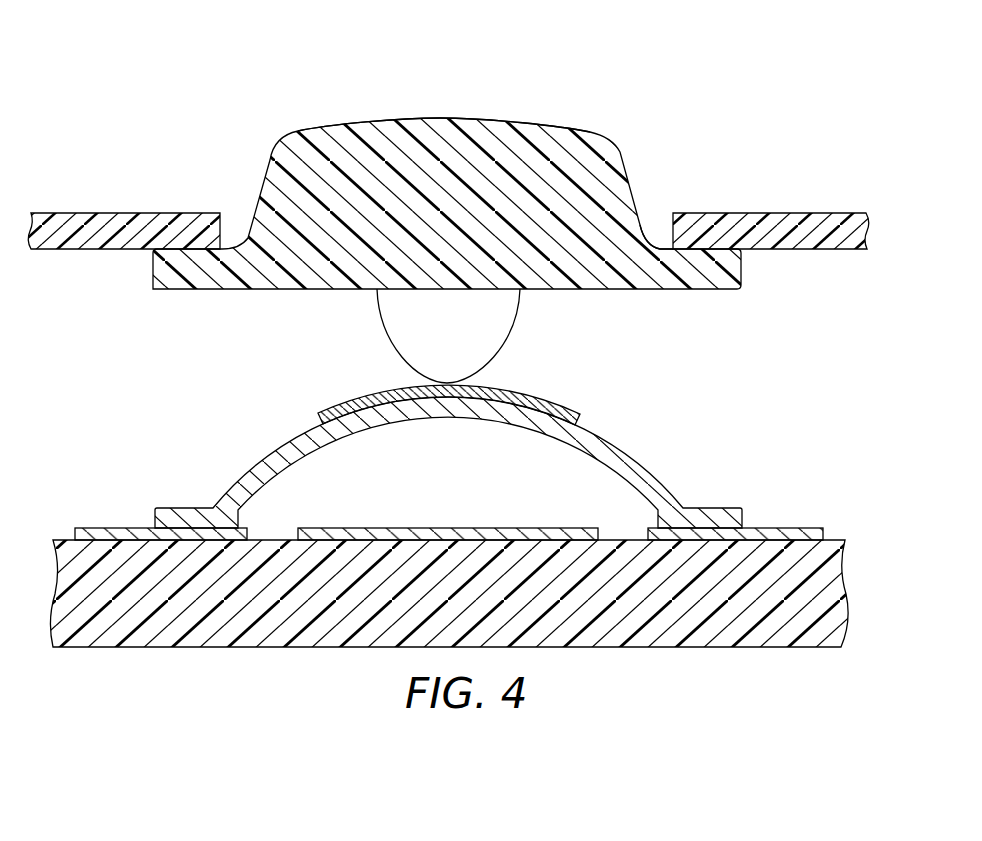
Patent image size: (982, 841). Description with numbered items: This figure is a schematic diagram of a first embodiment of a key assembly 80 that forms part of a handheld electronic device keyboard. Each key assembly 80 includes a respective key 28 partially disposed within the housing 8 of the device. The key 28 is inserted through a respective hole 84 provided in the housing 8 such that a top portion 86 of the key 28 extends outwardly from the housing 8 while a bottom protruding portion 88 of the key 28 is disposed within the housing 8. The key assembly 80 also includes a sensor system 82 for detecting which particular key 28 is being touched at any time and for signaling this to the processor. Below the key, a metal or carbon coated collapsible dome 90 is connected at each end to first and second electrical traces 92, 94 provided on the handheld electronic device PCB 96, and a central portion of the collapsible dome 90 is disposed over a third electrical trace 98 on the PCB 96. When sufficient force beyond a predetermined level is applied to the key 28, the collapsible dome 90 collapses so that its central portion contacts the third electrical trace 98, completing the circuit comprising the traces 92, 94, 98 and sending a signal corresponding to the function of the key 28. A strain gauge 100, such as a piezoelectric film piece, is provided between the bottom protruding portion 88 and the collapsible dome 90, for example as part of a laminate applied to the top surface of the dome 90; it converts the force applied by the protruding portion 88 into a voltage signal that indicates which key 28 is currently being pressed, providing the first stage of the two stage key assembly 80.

The housing 8 is at (740, 213).
The key 28 is at (320, 142).
The key assembly 80 is at (486, 86).
The sensor system 82 is at (632, 397).
The hole 84 is at (655, 217).
The top portion 86 is at (538, 127).
The bottom protruding portion 88 is at (521, 302).
The collapsible dome 90 is at (645, 467).
The first electrical trace 92 is at (118, 528).
The second electrical trace 94 is at (769, 528).
The handheld electronic device PCB 96 is at (845, 567).
The third electrical trace 98 is at (451, 528).
The strain gauge 100 is at (366, 397).